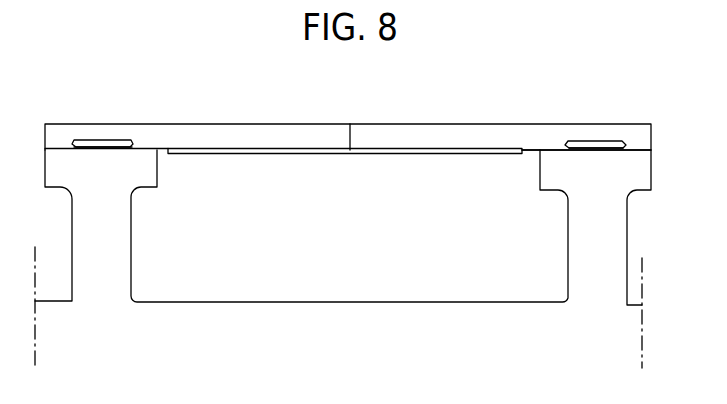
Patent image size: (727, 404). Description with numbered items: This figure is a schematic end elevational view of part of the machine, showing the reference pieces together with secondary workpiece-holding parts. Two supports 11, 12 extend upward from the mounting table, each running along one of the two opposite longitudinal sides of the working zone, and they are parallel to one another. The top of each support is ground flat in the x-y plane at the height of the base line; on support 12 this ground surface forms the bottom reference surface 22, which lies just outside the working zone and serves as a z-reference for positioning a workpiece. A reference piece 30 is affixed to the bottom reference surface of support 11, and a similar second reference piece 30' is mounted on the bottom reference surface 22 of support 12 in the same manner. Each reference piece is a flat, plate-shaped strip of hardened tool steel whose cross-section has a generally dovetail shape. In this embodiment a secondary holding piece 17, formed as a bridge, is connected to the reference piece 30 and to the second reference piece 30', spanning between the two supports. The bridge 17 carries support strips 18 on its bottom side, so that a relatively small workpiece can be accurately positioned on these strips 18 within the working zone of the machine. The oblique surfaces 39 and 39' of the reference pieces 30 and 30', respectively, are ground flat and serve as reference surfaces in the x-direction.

The support 11 is at (71, 210).
The support 12 is at (629, 232).
The secondary holding piece 17 is at (314, 123).
The support strips 18 is at (326, 155).
The bottom reference surface 22 is at (550, 148).
The reference piece 30 is at (102, 117).
The second reference piece 30' is at (595, 121).
The oblique surface 39 is at (85, 120).
The oblique surface 39' is at (627, 146).